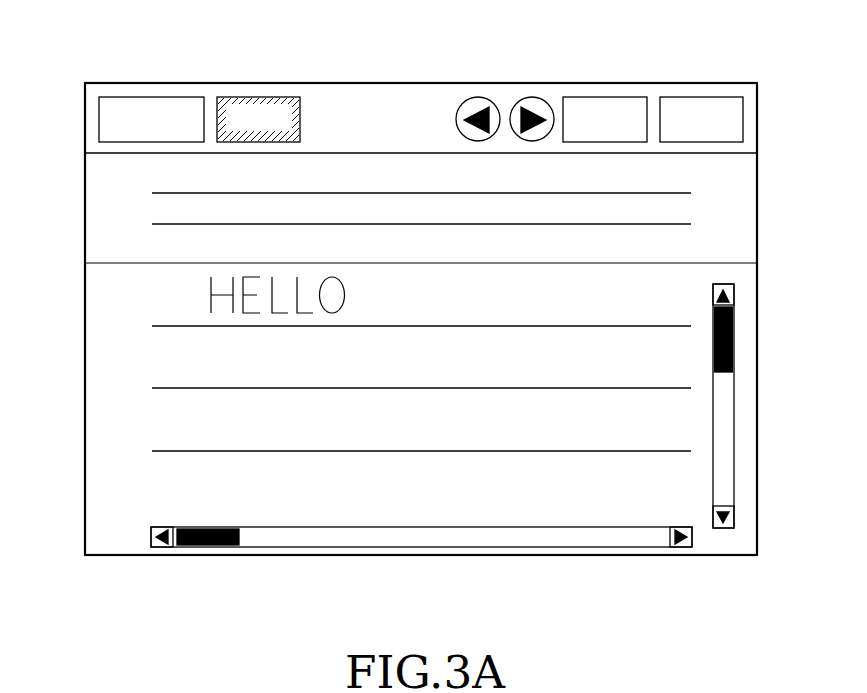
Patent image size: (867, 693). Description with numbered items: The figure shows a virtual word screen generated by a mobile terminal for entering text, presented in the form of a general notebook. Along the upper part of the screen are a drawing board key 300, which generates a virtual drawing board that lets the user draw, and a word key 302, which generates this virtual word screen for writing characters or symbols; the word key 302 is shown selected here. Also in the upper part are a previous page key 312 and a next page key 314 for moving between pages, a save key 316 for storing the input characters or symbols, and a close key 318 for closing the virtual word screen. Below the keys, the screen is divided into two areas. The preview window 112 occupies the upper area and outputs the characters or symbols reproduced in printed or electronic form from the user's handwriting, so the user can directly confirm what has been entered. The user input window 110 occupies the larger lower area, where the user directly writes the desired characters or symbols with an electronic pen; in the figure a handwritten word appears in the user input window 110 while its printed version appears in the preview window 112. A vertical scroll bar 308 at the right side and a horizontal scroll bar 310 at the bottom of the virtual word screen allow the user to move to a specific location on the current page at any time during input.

The drawing board key 300 is at (148, 95).
The word key 302 is at (258, 95).
The previous page key 312 is at (475, 97).
The next page key 314 is at (528, 97).
The save key 316 is at (603, 97).
The close key 318 is at (700, 97).
The preview window 112 is at (90, 208).
The user input window 110 is at (90, 389).
The vertical scroll bar 308 is at (735, 403).
The horizontal scroll bar 310 is at (425, 548).